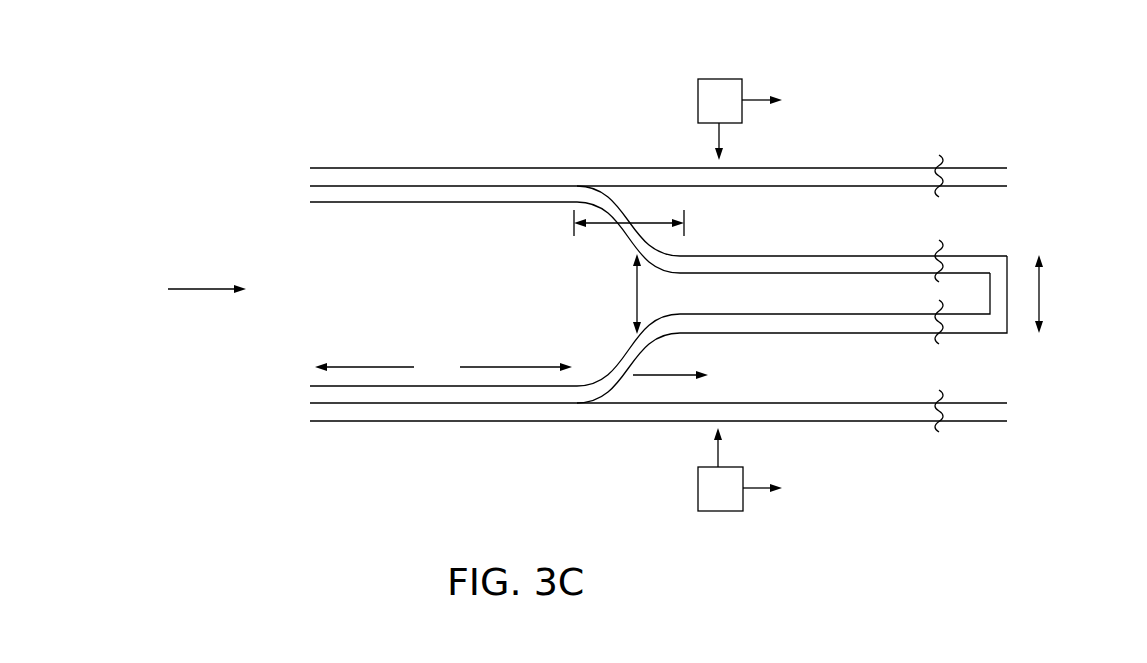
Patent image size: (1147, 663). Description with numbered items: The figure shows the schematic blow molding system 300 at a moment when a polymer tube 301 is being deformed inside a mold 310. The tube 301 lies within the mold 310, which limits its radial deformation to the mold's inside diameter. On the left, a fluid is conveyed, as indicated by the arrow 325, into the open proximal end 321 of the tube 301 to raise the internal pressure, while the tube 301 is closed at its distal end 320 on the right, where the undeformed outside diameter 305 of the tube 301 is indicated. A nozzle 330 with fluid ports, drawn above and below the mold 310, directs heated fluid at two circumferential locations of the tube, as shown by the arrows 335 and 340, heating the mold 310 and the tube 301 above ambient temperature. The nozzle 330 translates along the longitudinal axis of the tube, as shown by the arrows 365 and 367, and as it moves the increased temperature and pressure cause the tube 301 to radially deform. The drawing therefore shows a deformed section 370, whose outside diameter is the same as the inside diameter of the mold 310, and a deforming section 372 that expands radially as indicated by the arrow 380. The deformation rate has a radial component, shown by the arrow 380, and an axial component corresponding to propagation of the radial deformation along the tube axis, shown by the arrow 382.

The blow molding system 300 is at (276, 482).
The polymer tube 301 is at (372, 207).
The undeformed outside diameter 305 is at (1041, 293).
The mold 310 is at (337, 168).
The distal end 320 is at (1016, 256).
The open proximal end 321 is at (312, 344).
The arrow indicating fluid conveyance 325 is at (205, 289).
The nozzle 330 is at (712, 84).
The arrow indicating heated fluid 335 is at (716, 130).
The arrow indicating heated fluid 340 is at (716, 455).
The arrow indicating nozzle translation 365 is at (757, 97).
The arrow indicating nozzle translation 367 is at (762, 492).
The deformed section 370 is at (443, 367).
The deforming section 372 is at (608, 224).
The arrow indicating radial deformation 380 is at (637, 292).
The arrow indicating axial deformation component 382 is at (676, 374).